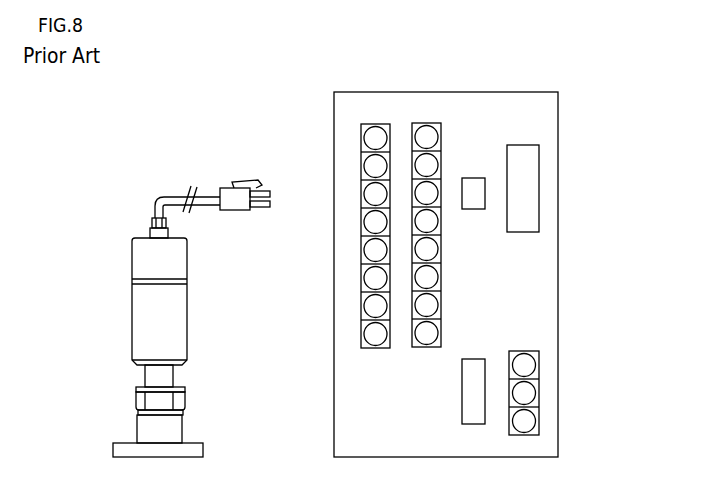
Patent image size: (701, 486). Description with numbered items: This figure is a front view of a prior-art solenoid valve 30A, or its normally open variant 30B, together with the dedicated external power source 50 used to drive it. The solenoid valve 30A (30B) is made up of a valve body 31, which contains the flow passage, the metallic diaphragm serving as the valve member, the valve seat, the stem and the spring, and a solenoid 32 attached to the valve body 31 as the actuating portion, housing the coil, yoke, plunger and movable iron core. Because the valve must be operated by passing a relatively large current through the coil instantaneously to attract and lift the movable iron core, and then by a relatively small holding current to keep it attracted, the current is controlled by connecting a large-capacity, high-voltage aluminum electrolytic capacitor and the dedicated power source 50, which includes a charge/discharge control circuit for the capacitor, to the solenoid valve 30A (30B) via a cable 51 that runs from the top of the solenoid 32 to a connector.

The solenoid valve 30A is at (123, 237).
The solenoid valve 30B is at (116, 304).
The valve body 31 is at (132, 415).
The solenoid 32 is at (132, 312).
The dedicated power source 50 is at (560, 167).
The cable 51 is at (198, 192).